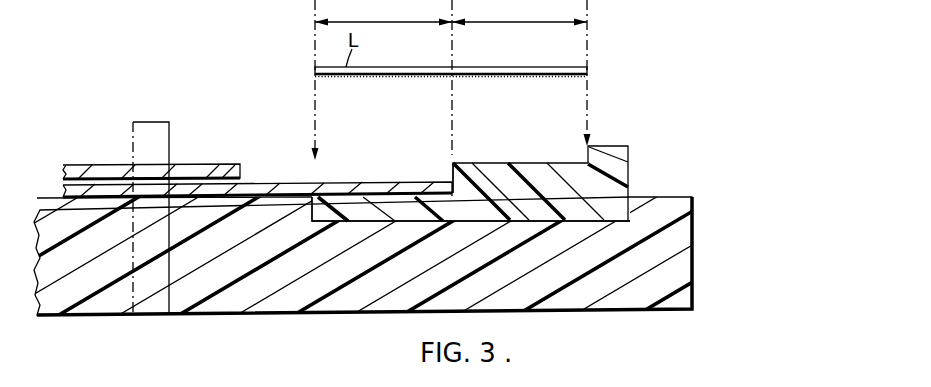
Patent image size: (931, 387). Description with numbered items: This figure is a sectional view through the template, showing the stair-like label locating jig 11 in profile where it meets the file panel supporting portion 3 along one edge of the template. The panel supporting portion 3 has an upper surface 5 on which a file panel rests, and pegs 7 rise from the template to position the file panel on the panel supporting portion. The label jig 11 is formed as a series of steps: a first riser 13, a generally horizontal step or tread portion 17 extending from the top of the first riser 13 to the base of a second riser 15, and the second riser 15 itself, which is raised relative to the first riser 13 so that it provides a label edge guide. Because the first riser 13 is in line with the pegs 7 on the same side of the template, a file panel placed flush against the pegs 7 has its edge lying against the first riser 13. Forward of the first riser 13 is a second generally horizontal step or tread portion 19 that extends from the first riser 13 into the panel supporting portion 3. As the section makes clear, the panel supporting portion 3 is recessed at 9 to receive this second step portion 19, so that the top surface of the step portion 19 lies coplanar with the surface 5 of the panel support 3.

The file panel supporting portion 3 is at (82, 232).
The surface of panel support 5 is at (203, 190).
The pegs 7 is at (155, 132).
The recess 9 is at (312, 222).
The label locating jig 11 is at (621, 170).
The first riser 13 is at (455, 177).
The second riser 15 is at (589, 146).
The step or tread portion 17 is at (492, 162).
The second step or tread portion 19 is at (317, 213).